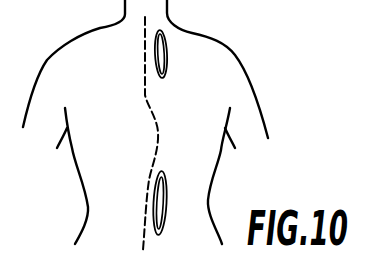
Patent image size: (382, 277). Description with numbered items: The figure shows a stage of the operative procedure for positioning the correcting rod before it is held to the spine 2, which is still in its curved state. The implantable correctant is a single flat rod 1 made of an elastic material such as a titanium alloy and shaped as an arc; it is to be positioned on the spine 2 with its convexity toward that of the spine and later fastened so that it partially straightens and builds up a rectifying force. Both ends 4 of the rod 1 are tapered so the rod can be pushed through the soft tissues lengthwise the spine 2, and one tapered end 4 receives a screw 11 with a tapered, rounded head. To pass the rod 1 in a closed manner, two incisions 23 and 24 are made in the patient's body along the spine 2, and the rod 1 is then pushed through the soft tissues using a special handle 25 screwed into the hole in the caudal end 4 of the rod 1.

The flat rod 1 is at (162, 78).
The spine 2 is at (147, 98).
The tapered end 4 is at (167, 57).
The screw 11 is at (165, 34).
The incision 23 is at (155, 53).
The incision 24 is at (157, 202).
The handle 25 is at (163, 226).